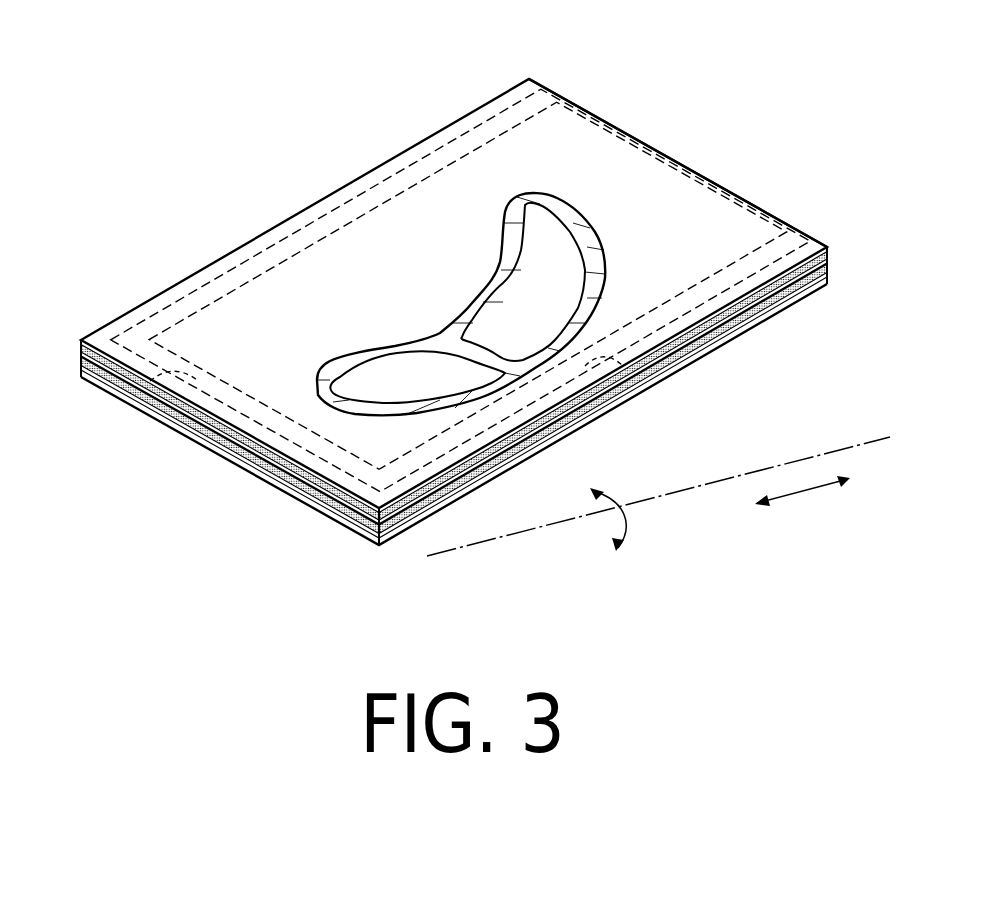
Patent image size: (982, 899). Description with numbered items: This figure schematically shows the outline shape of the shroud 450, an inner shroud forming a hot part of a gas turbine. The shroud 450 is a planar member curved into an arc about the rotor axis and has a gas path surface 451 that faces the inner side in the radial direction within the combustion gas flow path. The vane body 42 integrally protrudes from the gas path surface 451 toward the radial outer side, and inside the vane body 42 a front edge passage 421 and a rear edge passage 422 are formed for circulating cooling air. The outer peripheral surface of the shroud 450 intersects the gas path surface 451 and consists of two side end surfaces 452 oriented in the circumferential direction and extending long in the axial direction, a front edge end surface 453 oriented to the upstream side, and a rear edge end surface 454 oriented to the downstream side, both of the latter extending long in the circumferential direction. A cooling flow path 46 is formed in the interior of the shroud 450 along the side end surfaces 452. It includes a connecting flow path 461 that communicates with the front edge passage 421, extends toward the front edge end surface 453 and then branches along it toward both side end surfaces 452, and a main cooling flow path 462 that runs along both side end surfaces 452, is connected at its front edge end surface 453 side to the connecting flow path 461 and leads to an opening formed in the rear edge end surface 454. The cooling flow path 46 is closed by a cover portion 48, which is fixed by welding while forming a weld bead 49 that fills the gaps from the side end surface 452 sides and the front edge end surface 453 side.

The shroud 450 is at (534, 74).
The gas path surface 451 is at (583, 130).
The side end surfaces 452 is at (270, 230).
The front edge end surface 453 is at (212, 452).
The rear edge end surface 454 is at (700, 176).
The vane body 42 is at (452, 337).
The front edge passage 421 is at (397, 360).
The rear edge passage 422 is at (521, 268).
The cooling flow path 46 is at (444, 306).
The connecting flow path 461 is at (148, 383).
The main cooling flow path 462 is at (668, 412).
The cover portion 48 is at (82, 357).
The weld bead 49 is at (81, 347).